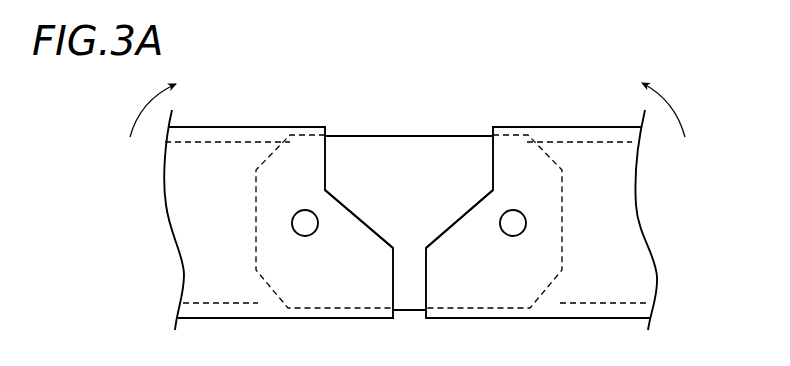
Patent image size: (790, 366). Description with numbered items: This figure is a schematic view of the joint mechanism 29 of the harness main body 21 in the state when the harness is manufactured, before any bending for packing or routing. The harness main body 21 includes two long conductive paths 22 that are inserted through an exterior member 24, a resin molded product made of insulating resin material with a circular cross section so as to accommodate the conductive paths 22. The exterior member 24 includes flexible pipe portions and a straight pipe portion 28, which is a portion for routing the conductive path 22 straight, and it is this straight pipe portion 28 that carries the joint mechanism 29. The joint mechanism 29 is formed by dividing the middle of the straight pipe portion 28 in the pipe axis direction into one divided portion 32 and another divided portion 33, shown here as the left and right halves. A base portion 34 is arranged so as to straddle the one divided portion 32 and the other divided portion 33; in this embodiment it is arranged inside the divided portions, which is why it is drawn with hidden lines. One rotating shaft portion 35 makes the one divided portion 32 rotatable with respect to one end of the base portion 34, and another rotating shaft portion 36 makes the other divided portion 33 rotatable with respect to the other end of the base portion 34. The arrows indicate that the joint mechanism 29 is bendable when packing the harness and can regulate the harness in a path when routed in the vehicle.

The harness main body 21 is at (619, 66).
The conductive path 22 is at (632, 232).
The exterior member 24 is at (449, 220).
The straight pipe portion 28 is at (640, 278).
The joint mechanism 29 is at (429, 91).
The one divided portion 32 is at (277, 177).
The other divided portion 33 is at (542, 178).
The base portion 34 is at (382, 178).
The one rotating shaft portion 35 is at (308, 222).
The other rotating shaft portion 36 is at (510, 222).